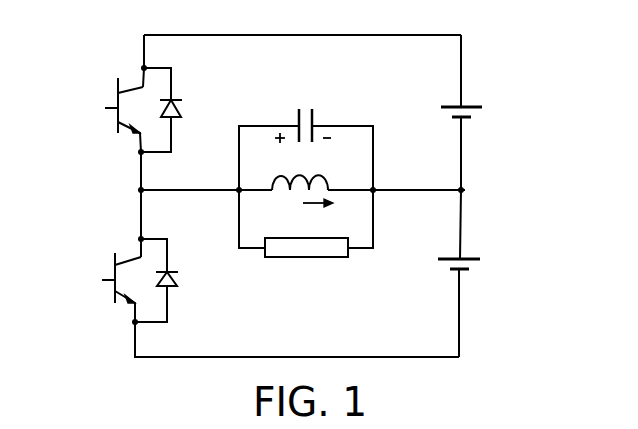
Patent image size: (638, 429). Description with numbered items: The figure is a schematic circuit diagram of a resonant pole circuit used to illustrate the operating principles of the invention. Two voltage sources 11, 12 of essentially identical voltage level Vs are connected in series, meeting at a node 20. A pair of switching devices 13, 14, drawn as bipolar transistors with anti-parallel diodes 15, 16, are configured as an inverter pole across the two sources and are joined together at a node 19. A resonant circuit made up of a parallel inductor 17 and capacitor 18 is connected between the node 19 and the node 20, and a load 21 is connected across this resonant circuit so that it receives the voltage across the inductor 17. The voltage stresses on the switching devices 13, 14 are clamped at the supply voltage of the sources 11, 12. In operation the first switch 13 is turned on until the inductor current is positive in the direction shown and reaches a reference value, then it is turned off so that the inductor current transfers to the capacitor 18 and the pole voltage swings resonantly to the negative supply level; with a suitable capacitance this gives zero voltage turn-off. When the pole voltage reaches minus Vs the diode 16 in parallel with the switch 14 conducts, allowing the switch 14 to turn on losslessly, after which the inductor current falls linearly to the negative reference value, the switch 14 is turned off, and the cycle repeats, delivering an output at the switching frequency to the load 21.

The voltage source 11 is at (470, 102).
The voltage source 12 is at (470, 257).
The switching device 13 is at (130, 127).
The switching device 14 is at (126, 299).
The anti-parallel diode 15 is at (178, 100).
The anti-parallel diode 16 is at (180, 277).
The inductor 17 is at (330, 187).
The capacitor 18 is at (314, 118).
The node 19 is at (132, 190).
The node 20 is at (461, 191).
The load 21 is at (337, 257).